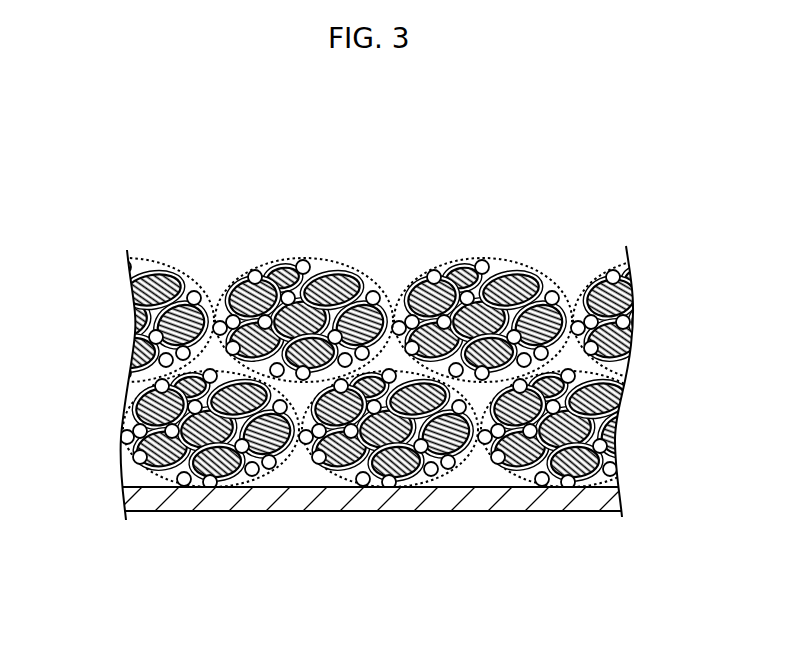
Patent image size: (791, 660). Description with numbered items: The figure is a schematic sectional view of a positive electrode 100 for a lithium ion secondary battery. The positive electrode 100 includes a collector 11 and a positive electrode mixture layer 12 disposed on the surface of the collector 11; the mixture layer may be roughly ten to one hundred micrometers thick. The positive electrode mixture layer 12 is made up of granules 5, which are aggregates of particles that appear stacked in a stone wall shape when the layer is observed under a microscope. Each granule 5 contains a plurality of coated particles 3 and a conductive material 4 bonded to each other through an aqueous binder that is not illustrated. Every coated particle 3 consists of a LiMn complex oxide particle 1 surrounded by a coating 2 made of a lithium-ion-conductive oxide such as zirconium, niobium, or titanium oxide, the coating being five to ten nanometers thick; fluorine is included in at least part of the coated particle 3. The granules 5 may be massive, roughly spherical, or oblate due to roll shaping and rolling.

The LiMn complex oxide particle 1 is at (328, 288).
The coating 2 is at (357, 273).
The coated particle 3 is at (380, 216).
The conductive material 4 is at (255, 271).
The granule 5 is at (382, 181).
The collector 11 is at (476, 497).
The positive electrode mixture layer 12 is at (648, 266).
The positive electrode 100 is at (141, 156).